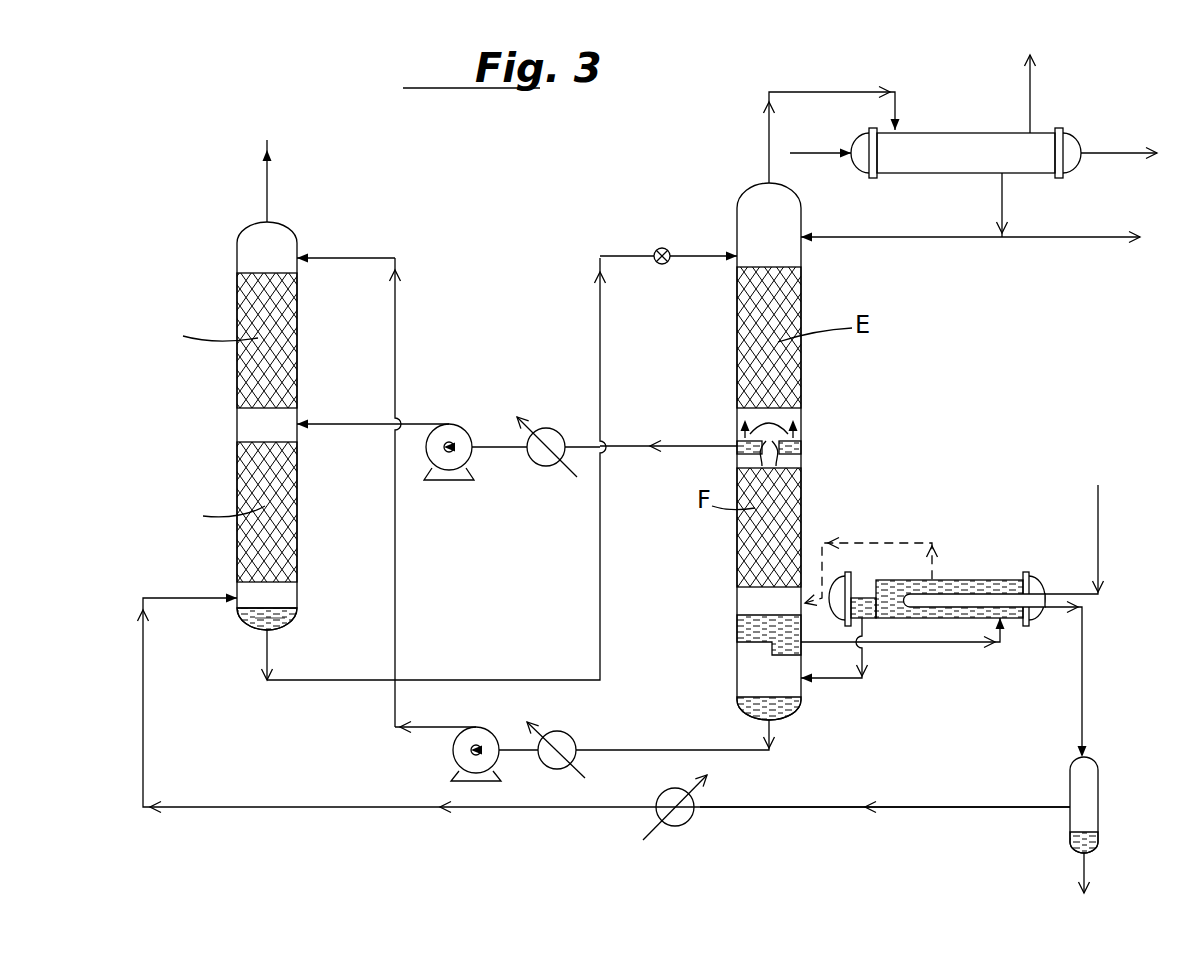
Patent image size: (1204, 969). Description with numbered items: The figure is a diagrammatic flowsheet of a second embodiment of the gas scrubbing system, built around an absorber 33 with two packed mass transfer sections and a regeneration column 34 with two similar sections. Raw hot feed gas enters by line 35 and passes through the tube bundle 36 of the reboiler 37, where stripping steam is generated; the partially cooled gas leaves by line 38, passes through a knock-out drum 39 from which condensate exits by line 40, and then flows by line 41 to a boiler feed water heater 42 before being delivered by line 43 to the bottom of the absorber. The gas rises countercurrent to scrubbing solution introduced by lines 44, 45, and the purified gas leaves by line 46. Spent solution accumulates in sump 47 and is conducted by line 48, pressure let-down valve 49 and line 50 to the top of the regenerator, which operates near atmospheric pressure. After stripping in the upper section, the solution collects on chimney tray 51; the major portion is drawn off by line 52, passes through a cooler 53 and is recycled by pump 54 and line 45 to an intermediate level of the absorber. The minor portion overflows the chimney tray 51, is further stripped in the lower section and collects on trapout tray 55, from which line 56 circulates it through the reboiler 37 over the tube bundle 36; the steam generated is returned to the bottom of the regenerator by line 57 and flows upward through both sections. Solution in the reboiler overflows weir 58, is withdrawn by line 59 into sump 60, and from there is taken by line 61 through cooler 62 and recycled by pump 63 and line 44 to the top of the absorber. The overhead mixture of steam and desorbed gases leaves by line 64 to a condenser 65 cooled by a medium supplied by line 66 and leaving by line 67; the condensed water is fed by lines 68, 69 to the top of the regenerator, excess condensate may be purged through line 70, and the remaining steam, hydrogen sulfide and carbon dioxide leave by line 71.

The absorber 33 is at (237, 421).
The regeneration column 34 is at (805, 418).
The line 35 is at (1100, 545).
The tube bundle 36 is at (955, 598).
The reboiler 37 is at (993, 580).
The line 38 is at (1085, 672).
The knock-out drum 39 is at (1093, 800).
The line 40 is at (1085, 870).
The line 41 is at (930, 807).
The boiler feed water heater 42 is at (683, 812).
The line 43 is at (328, 808).
The line 44 is at (348, 257).
The line 45 is at (345, 416).
The line 46 is at (268, 190).
The sump 47 is at (288, 622).
The line 48 is at (600, 660).
The pressure let-down valve 49 is at (655, 250).
The line 50 is at (692, 258).
The chimney tray 51 is at (801, 458).
The line 52 is at (670, 446).
The cooler 53 is at (545, 465).
The pump 54 is at (445, 437).
The trapout tray 55 is at (752, 645).
The line 56 is at (962, 650).
The line 57 is at (868, 540).
The weir 58 is at (868, 590).
The line 59 is at (866, 660).
The sump 60 is at (790, 708).
The line 61 is at (668, 750).
The cooler 62 is at (568, 742).
The pump 63 is at (460, 750).
The line 64 is at (767, 120).
The condenser 65 is at (937, 140).
The line 66 is at (822, 155).
The line 67 is at (1105, 150).
The line 68 is at (1000, 200).
The line 69 is at (915, 238).
The line 70 is at (1075, 238).
The line 71 is at (1032, 88).